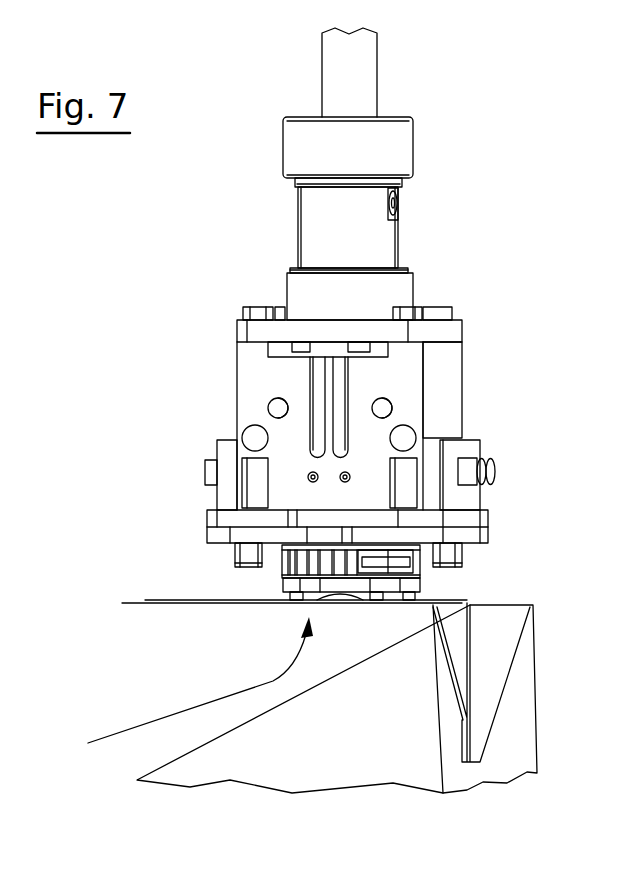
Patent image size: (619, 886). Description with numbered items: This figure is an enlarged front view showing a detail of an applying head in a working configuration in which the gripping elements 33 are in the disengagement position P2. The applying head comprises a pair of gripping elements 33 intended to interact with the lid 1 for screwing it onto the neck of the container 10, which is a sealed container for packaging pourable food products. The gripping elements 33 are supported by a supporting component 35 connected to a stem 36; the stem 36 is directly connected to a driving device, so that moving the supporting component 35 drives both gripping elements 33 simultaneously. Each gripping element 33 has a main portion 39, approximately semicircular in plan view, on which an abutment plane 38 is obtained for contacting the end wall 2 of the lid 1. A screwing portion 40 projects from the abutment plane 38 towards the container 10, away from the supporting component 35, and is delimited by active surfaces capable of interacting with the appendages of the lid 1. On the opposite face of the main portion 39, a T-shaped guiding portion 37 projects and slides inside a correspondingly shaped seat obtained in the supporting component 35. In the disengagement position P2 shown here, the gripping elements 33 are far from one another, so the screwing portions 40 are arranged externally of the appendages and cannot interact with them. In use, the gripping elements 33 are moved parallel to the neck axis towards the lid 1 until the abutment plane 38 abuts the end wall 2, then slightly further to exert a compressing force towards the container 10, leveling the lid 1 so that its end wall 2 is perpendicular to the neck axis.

The lid 1 is at (283, 572).
The end wall 2 is at (345, 542).
The container 10 is at (500, 750).
The gripping elements 33 is at (207, 537).
The supporting component 35 is at (440, 368).
The stem 36 is at (340, 83).
The guiding portion 37 is at (202, 473).
The abutment plane 38 is at (233, 567).
The main portion 39 is at (247, 533).
The screwing portion 40 is at (233, 553).
The disengagement position P2 is at (185, 687).